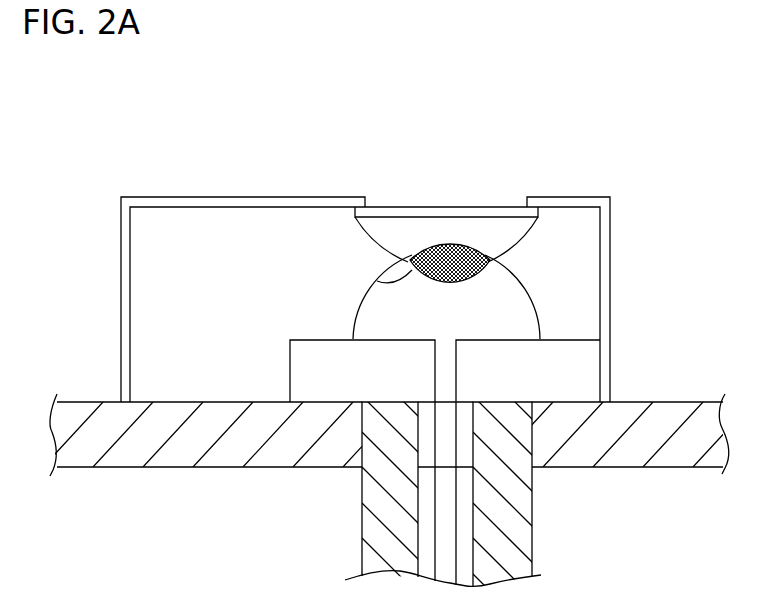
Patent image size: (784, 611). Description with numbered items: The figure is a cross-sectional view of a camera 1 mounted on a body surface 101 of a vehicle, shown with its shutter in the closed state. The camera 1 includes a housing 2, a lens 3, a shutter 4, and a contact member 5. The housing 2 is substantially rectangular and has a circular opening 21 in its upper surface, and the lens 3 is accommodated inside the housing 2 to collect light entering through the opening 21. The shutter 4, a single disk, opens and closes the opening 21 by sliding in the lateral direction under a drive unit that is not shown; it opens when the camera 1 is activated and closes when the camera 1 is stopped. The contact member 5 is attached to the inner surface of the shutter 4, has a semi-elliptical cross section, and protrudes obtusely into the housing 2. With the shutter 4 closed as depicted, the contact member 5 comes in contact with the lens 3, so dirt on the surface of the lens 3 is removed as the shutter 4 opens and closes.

The camera 1 is at (706, 180).
The housing 2 is at (213, 197).
The opening 21 is at (365, 199).
The lens 3 is at (377, 280).
The shutter 4 is at (480, 207).
The contact member 5 is at (513, 259).
The body surface 101 is at (647, 402).